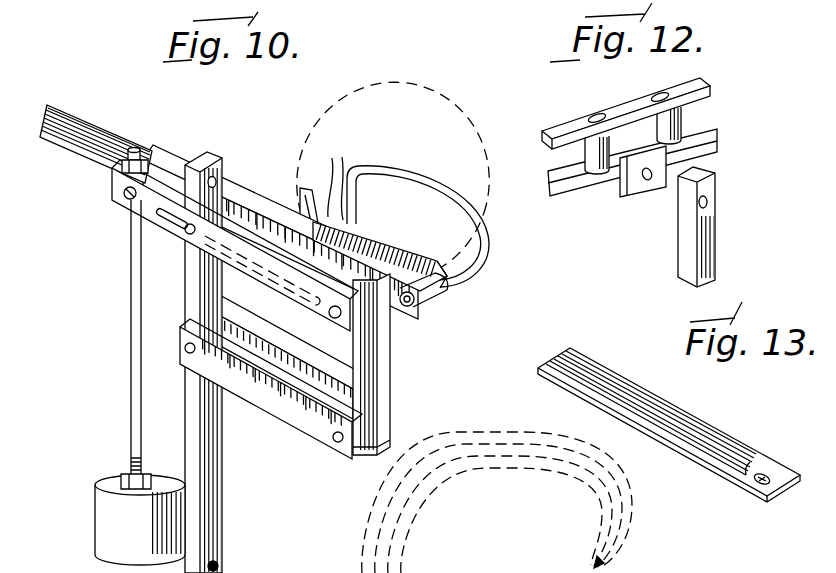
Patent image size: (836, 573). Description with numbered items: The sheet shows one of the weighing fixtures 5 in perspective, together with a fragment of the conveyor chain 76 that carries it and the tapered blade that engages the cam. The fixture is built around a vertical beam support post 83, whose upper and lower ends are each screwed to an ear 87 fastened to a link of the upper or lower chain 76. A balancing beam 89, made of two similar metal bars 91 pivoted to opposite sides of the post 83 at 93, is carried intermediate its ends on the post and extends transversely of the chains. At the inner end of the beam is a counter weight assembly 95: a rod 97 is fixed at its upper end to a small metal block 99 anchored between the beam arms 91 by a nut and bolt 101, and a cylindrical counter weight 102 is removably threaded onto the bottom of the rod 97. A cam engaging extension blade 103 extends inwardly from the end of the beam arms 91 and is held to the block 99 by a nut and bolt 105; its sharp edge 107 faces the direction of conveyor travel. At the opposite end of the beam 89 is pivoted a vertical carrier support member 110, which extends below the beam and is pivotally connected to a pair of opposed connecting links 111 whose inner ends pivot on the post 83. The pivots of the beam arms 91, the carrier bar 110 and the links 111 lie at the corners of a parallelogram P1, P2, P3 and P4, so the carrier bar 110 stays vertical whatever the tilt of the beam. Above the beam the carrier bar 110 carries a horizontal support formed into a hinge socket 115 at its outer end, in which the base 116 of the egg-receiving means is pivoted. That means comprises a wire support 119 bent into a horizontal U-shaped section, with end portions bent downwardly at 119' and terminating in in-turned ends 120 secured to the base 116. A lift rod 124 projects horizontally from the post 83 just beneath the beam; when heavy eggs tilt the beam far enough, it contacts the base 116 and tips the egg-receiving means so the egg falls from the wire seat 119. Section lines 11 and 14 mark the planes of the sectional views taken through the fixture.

In FIG. 10, the weighing fixture 5 is at (262, 479).
In FIG. 10, the section line 11 is at (220, 120).
In FIG. 10, the section line 14 is at (424, 556).
In FIG. 12, the endless chain 76 is at (570, 128).
In FIG. 10, the beam support post 83 is at (217, 530).
In FIG. 12, the beam support post 83 is at (712, 248).
In FIG. 12, the ear 87 is at (637, 188).
In FIG. 10, the balancing beam 89 is at (303, 312).
In FIG. 10, the metal bar 91 is at (247, 192).
In FIG. 10, the pivot 93 is at (182, 229).
In FIG. 10, the counter weight assembly 95 is at (126, 382).
In FIG. 10, the rod 97 is at (130, 275).
In FIG. 10, the metal block 99 is at (196, 157).
In FIG. 10, the nut and bolt 101 is at (112, 192).
In FIG. 10, the cylindrical counter weight 102 is at (100, 503).
In FIG. 10, the cam engaging extension blade 103 is at (98, 148).
In FIG. 13, the cam engaging extension blade 103 is at (722, 470).
In FIG. 10, the nut and bolt 105 is at (140, 146).
In FIG. 10, the sharp edge 107 is at (63, 157).
In FIG. 13, the sharp edge 107 is at (618, 372).
In FIG. 10, the carrier support member 110 is at (368, 363).
In FIG. 10, the connecting link 111 is at (316, 348).
In FIG. 10, the hinge socket 115 is at (425, 304).
In FIG. 10, the base 116 is at (390, 250).
In FIG. 10, the wire support 119 is at (454, 317).
In FIG. 10, the downwardly bent end portion 119' is at (292, 211).
In FIG. 10, the in-turned end 120 is at (345, 158).
In FIG. 10, the lift rod 124 is at (212, 272).
In FIG. 10, the pivot point P1 is at (187, 236).
In FIG. 10, the pivot point P2 is at (337, 320).
In FIG. 10, the pivot point P3 is at (333, 440).
In FIG. 10, the pivot point P4 is at (185, 350).